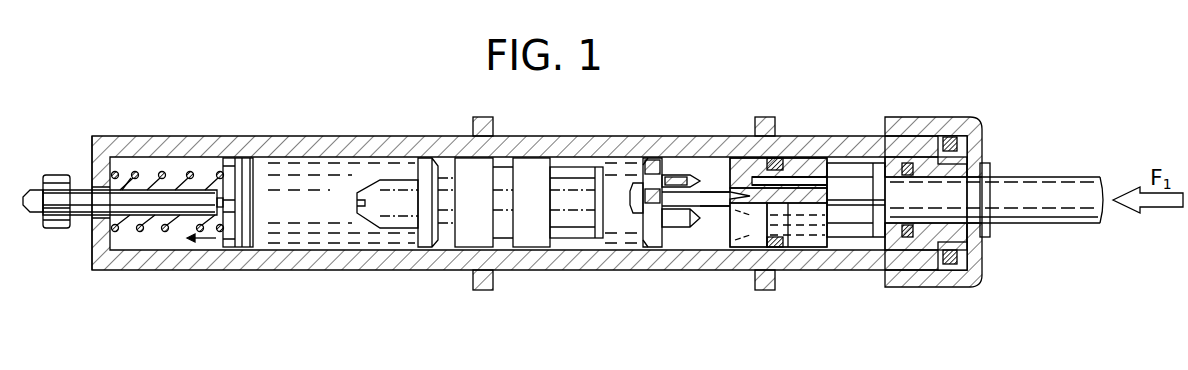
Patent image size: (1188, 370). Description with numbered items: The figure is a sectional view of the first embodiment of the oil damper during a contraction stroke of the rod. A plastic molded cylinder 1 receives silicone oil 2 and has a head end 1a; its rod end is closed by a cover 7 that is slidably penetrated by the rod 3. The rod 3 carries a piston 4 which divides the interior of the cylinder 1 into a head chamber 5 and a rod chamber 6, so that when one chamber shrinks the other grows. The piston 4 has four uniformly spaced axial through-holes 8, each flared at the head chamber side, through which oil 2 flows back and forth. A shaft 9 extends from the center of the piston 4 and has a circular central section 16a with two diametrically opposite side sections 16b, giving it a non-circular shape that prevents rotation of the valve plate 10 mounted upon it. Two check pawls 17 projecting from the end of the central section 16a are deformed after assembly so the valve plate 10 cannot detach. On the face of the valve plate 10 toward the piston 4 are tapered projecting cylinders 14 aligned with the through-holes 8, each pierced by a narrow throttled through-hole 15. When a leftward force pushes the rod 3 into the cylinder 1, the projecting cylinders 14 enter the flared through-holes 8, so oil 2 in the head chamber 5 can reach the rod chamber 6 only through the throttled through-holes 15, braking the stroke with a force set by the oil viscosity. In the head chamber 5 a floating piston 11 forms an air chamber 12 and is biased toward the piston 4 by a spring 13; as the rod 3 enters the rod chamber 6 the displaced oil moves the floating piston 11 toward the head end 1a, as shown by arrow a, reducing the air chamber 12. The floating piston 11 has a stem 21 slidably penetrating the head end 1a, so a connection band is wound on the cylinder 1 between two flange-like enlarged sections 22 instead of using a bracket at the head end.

The cylinder 1 is at (330, 152).
The head end 1a is at (92, 157).
The oil 2 is at (328, 237).
The rod 3 is at (1035, 195).
The piston 4 is at (790, 166).
The head chamber 5 is at (278, 236).
The rod chamber 6 is at (843, 245).
The cover 7 is at (955, 121).
The through-holes 8 is at (812, 180).
The shaft 9 is at (712, 208).
The valve plate 10 is at (650, 242).
The floating piston 11 is at (243, 158).
The air chamber 12 is at (168, 160).
The spring 13 is at (131, 172).
The projecting cylinders 14 is at (668, 177).
The throttled through-holes 15 is at (678, 178).
The central section 16a is at (715, 199).
The side sections 16b is at (706, 186).
The check pawls 17 is at (632, 200).
The stem 21 is at (72, 230).
The flange-like enlarged sections 22 is at (482, 284).
The arrow a is at (207, 242).